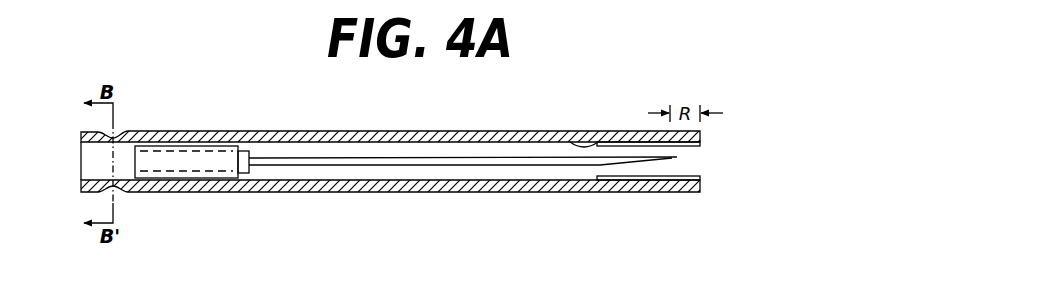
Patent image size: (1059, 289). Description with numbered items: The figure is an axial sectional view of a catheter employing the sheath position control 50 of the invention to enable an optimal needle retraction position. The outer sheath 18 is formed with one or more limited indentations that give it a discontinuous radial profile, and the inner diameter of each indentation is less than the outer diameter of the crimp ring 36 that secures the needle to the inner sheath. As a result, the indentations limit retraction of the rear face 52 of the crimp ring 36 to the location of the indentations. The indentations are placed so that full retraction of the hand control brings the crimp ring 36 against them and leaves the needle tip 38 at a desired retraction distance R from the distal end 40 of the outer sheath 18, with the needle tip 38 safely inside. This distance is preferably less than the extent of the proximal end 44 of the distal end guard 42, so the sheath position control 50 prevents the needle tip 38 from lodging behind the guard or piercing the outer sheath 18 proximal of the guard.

The outer sheath 18 is at (424, 131).
The crimp ring 36 is at (172, 167).
The needle tip 38 is at (678, 157).
The distal end of the outer sheath 40 is at (713, 192).
The distal end guard 42 is at (692, 142).
The proximal end of the distal end guard 44 is at (567, 140).
The sheath position control 50 is at (126, 121).
The rear face of the crimp ring 52 is at (132, 160).